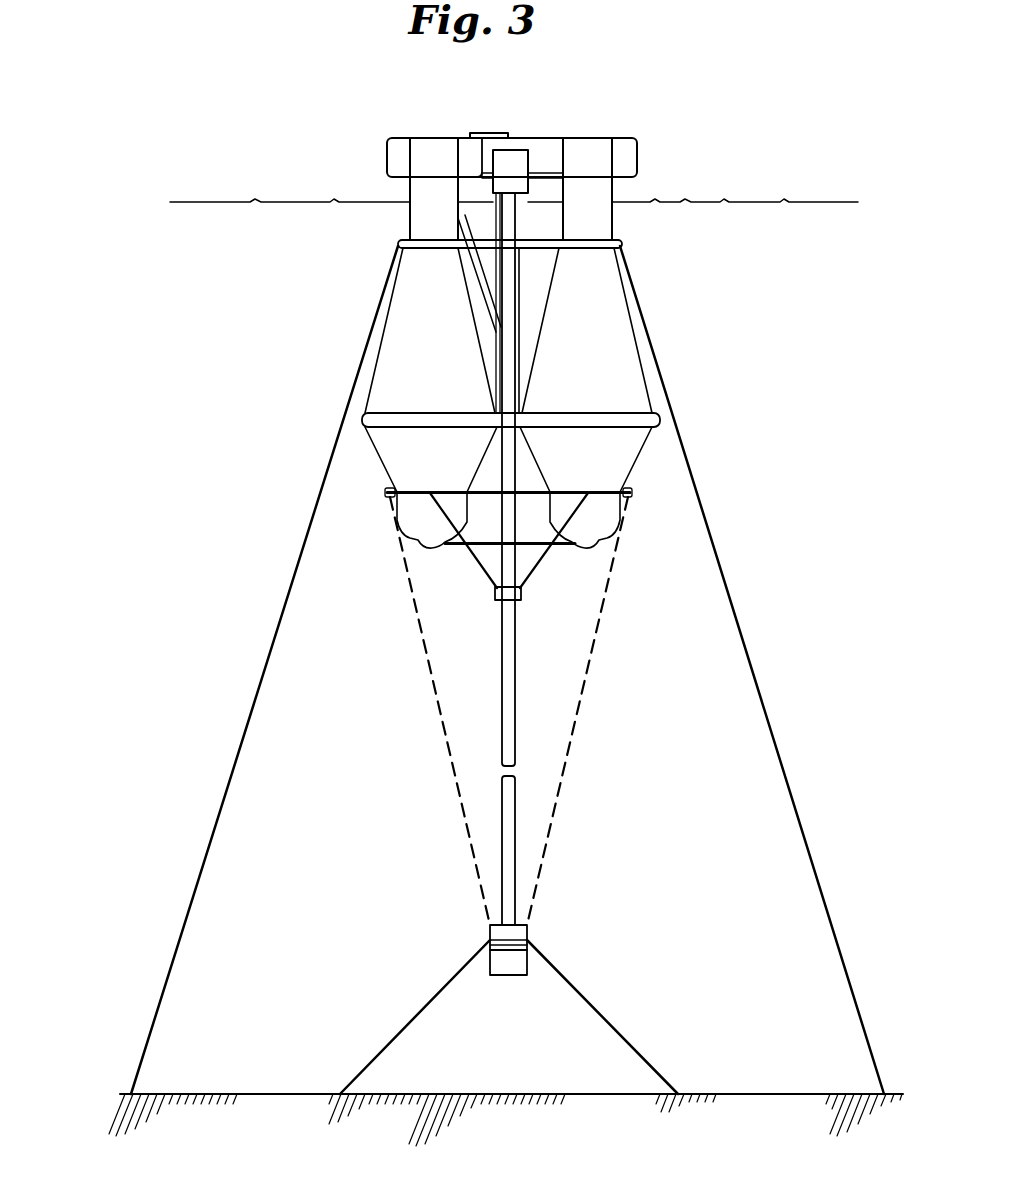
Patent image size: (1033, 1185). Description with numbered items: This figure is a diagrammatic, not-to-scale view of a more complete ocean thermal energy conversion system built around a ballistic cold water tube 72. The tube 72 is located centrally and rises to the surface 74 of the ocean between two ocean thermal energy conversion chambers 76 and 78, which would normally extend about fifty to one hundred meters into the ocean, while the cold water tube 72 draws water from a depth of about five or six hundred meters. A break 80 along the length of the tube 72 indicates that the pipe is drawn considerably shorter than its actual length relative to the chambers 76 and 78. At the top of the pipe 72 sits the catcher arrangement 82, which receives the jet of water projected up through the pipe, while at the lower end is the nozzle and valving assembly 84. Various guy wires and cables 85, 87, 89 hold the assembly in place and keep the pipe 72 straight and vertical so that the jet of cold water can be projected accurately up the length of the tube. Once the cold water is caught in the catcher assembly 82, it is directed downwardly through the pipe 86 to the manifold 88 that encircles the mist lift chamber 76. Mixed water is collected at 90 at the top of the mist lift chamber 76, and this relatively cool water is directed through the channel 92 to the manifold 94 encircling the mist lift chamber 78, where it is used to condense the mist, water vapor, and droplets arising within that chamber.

The ballistic cold water tube 72 is at (510, 645).
The ocean surface 74 is at (698, 202).
The ocean thermal energy conversion chamber 76 is at (440, 394).
The ocean thermal energy conversion chamber 78 is at (598, 394).
The break 80 is at (503, 770).
The catcher arrangement 82 is at (523, 163).
The nozzle and valving assembly 84 is at (498, 970).
The guy wires and cables 85 is at (248, 732).
The pipe 86 is at (493, 353).
The guy wires and cables 87 is at (422, 643).
The manifold 88 is at (388, 422).
The guy wires and cables 89 is at (475, 568).
The mixed water collection 90 is at (395, 160).
The channel 92 is at (477, 267).
The manifold 94 is at (657, 417).